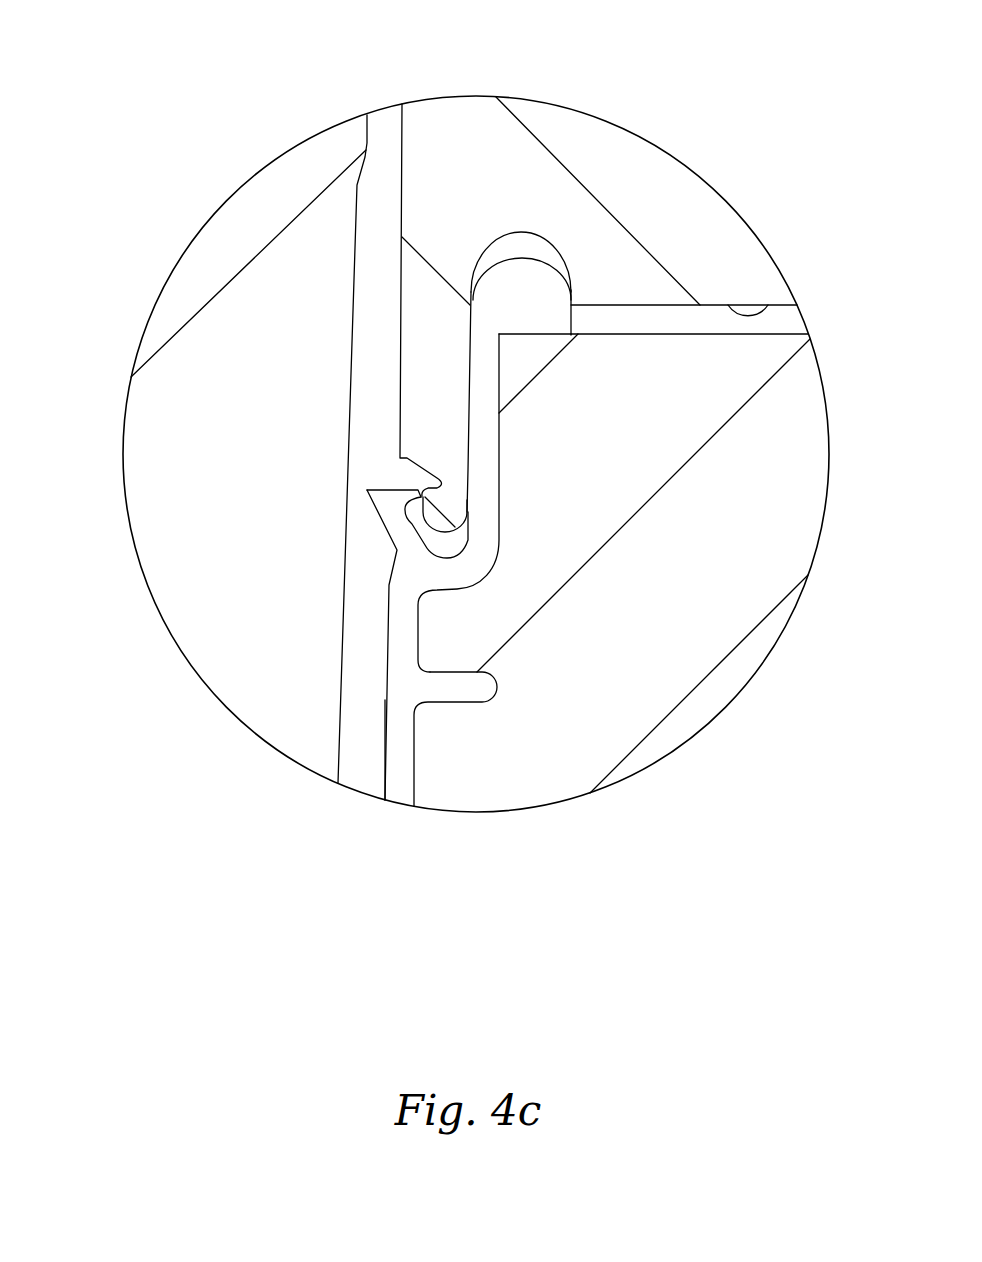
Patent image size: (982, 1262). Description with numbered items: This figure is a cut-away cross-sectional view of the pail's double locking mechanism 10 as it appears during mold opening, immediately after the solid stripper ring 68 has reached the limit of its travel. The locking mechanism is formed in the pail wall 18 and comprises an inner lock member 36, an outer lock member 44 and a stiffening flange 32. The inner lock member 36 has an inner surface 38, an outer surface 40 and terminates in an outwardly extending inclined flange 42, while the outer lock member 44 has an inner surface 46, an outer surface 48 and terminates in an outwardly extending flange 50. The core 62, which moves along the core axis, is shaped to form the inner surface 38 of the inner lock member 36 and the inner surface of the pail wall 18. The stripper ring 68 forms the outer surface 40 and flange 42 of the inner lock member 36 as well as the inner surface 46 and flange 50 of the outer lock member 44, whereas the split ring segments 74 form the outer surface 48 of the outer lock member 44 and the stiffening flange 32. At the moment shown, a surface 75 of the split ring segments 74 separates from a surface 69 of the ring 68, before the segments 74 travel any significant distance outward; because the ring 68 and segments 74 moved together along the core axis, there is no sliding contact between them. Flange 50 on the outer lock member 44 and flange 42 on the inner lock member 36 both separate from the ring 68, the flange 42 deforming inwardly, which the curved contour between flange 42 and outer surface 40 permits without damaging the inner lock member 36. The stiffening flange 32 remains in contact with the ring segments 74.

The assembly 10 is at (382, 745).
The pail wall 18 is at (383, 773).
The stiffening flange 32 is at (457, 703).
The inner lock member 36 is at (377, 513).
The inner surface 38 is at (391, 540).
The outer surface 40 is at (432, 490).
The inclined flange 42 is at (392, 490).
The outer lock member 44 is at (500, 455).
The inner surface 46 is at (470, 355).
The outer surface 48 is at (500, 368).
The flange 50 is at (547, 265).
The core 62 is at (273, 332).
The solid stripper ring 68 is at (598, 155).
The surface of ring 69 is at (773, 305).
The split ring segments 74 is at (653, 613).
The surface of split ring segments 75 is at (785, 332).